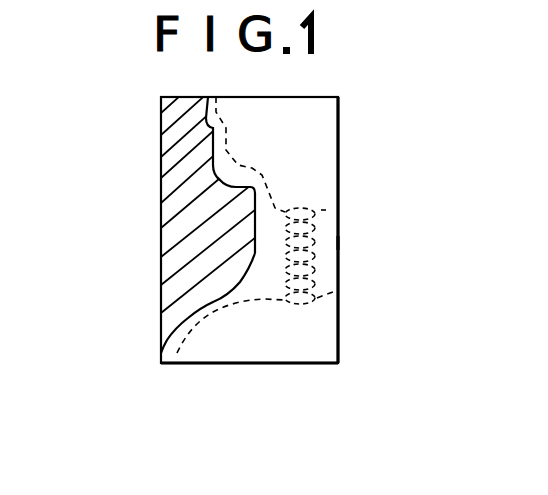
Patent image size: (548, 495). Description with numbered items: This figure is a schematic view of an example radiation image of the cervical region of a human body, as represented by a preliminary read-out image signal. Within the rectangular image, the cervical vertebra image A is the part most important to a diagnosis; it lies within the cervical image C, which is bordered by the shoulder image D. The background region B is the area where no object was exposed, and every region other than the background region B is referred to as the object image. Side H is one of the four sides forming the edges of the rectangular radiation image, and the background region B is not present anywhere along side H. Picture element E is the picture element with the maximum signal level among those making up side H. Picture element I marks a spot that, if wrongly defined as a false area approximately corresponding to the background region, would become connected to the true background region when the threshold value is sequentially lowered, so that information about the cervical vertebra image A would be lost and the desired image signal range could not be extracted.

The cervical vertebra image A is at (330, 229).
The background region B is at (177, 241).
The cervical image C is at (243, 156).
The shoulder image D is at (208, 338).
The picture element E is at (336, 243).
The side H is at (339, 178).
The picture element I is at (258, 277).